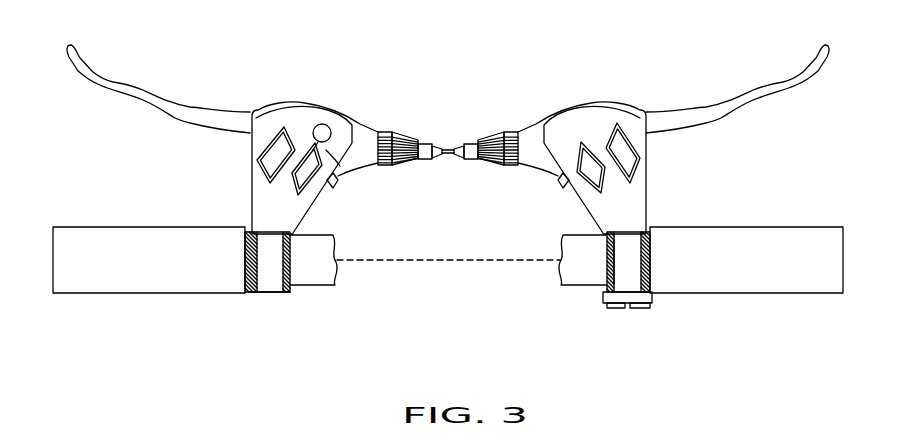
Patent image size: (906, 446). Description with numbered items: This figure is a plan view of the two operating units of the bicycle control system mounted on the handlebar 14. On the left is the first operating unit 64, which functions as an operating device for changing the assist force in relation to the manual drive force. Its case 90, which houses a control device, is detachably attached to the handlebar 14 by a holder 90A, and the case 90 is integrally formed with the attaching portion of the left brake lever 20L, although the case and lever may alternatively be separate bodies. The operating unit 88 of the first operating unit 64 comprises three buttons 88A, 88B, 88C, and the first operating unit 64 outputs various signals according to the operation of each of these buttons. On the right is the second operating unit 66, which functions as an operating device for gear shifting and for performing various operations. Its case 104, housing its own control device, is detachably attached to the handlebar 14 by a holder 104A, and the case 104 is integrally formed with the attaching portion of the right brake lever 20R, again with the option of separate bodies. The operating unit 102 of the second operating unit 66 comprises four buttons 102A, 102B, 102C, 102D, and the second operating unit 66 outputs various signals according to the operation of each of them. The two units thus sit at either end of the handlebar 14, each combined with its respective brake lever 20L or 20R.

The handlebar 14 is at (798, 226).
The left brake lever 20L is at (141, 89).
The right brake lever 20R is at (756, 88).
The first operating unit 64 is at (247, 189).
The second operating unit 66 is at (651, 189).
The operating unit 88 is at (271, 118).
The button 88A is at (318, 124).
The button 88B is at (262, 158).
The button 88C is at (350, 179).
The case 90 is at (292, 210).
The holder 90A is at (270, 293).
The operating unit 102 is at (624, 118).
The button 102A is at (617, 311).
The button 102B is at (640, 311).
The button 102C is at (558, 178).
The button 102D is at (641, 157).
The case 104 is at (602, 211).
The holder 104A is at (634, 268).